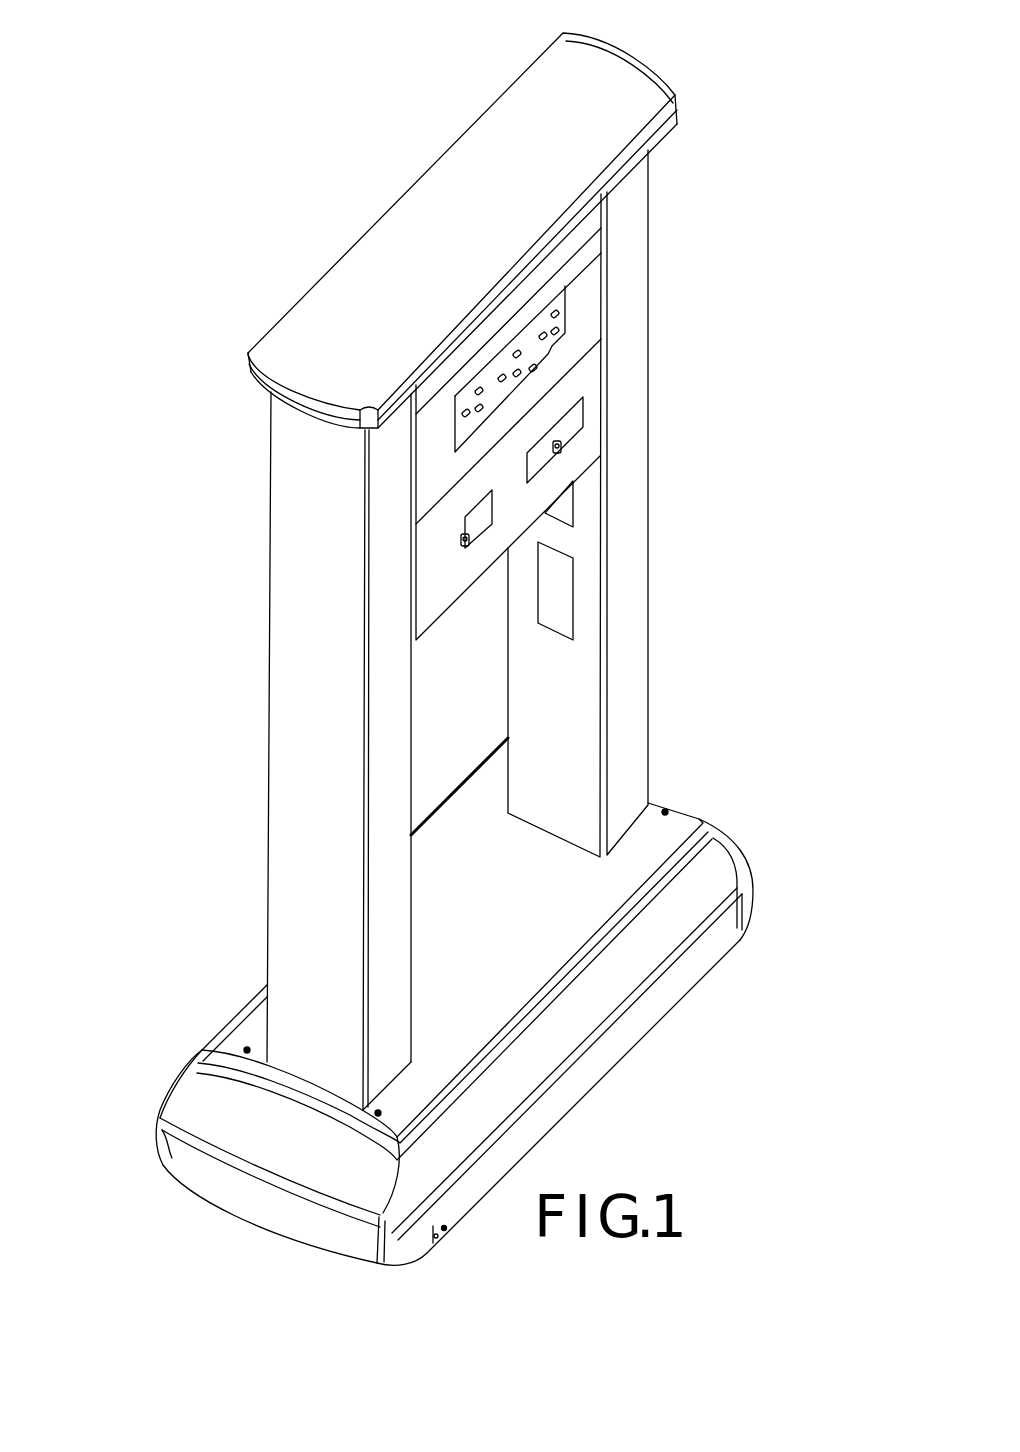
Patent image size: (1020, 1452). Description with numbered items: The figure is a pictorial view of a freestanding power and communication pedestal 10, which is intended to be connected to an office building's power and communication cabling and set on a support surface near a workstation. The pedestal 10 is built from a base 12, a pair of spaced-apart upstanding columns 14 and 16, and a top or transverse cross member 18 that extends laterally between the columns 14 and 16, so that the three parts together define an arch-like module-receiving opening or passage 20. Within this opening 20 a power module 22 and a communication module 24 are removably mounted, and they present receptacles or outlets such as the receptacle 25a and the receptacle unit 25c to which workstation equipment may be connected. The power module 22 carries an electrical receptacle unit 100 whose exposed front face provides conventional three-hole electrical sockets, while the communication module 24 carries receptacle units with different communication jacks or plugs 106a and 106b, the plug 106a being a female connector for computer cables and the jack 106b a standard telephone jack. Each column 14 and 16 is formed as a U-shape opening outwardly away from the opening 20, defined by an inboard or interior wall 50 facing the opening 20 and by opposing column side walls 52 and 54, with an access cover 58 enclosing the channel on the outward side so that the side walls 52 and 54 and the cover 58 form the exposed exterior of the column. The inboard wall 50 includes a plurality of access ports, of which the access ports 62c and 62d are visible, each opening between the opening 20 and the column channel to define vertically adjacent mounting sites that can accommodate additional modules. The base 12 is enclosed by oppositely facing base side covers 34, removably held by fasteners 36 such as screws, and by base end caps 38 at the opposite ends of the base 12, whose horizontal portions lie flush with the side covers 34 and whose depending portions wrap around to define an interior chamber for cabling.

The power and/or communication pedestal 10 is at (231, 242).
The base 12 is at (465, 1035).
The column 14 is at (288, 470).
The column 16 is at (630, 375).
The top or transverse cross member 18 is at (593, 227).
The module-receiving arch-like opening or passage 20 is at (480, 721).
The power module 22 is at (592, 298).
The communication module 24 is at (588, 375).
The receptacle or outlet 25a is at (558, 338).
The receptacle unit 25c is at (572, 413).
The base side cover 34 is at (245, 1020).
The fastener 36 is at (666, 812).
The base end cap 38 is at (738, 861).
The inboard or interior wall 50 is at (583, 748).
The column side wall 52 is at (380, 605).
The column side wall 54 is at (269, 573).
The access cover 58 is at (290, 710).
The access port 62c is at (575, 505).
The access port 62d is at (573, 582).
The electrical receptacle unit 100 is at (584, 221).
The communication jack or plug 106a is at (461, 540).
The connector jack 106b is at (567, 447).